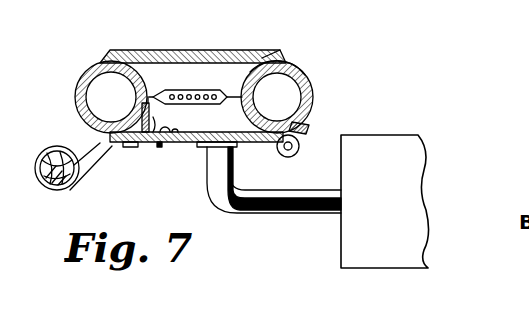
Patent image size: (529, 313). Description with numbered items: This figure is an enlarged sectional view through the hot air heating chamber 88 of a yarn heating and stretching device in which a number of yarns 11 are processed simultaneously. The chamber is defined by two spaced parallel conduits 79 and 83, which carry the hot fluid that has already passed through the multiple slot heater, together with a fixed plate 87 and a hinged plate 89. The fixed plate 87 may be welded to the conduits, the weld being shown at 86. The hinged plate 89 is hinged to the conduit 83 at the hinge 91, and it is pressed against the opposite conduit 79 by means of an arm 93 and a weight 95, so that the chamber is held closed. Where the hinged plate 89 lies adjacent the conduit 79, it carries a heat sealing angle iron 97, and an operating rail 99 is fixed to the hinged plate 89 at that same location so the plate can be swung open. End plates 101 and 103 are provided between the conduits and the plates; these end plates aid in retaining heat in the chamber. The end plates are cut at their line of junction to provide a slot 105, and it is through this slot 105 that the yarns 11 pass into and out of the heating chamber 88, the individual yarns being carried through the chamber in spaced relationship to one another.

The yarns 11 is at (182, 93).
The parallel conduit 79 is at (77, 93).
The parallel conduit 83 is at (313, 93).
The weld 86 is at (287, 63).
The fixed plate 87 is at (136, 50).
The hot air heating chamber 88 is at (268, 62).
The hinged plate 89 is at (186, 148).
The hinge 91 is at (299, 149).
The arm 93 is at (283, 192).
The weight 95 is at (412, 131).
The heat sealing angle iron 97 is at (151, 143).
The operating rail 99 is at (60, 150).
The end plate 101 is at (157, 75).
The end plate 103 is at (237, 118).
The slot 105 is at (213, 92).